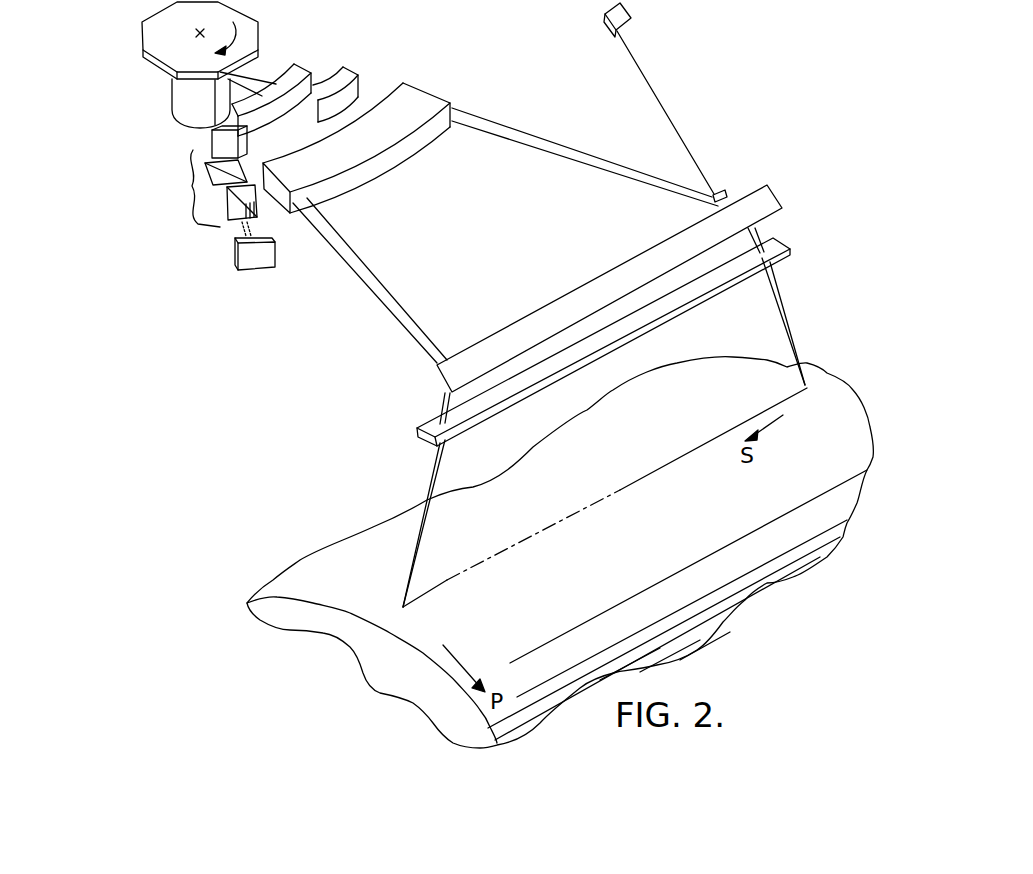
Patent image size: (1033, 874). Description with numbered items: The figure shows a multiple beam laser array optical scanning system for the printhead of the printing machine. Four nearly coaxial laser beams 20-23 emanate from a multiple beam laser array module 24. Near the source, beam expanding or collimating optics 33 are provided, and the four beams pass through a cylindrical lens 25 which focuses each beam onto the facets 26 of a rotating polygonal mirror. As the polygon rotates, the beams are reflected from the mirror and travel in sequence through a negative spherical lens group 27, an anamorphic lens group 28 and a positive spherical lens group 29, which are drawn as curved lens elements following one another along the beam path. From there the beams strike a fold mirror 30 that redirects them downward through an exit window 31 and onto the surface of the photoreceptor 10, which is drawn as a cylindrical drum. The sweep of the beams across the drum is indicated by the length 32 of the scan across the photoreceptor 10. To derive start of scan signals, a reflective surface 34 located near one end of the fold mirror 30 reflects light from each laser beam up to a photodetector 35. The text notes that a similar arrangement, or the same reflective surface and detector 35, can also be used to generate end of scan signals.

The photoreceptor 10 is at (700, 623).
The laser beams 20-23 is at (243, 237).
The multiple beam laser array module 24 is at (247, 265).
The cylindrical lens 25 is at (213, 138).
The facets of a rotating polygonal mirror 26 is at (247, 58).
The negative spherical lens group 27 is at (296, 64).
The anamorphic lens group 28 is at (346, 68).
The positive spherical lens group 29 is at (420, 106).
The fold mirror 30 is at (757, 188).
The exit window 31 is at (770, 248).
The length of the scan 32 is at (623, 490).
The beam expanding or collimating optics 33 is at (192, 187).
The reflective surface 34 is at (724, 190).
The photodetector 35 is at (631, 12).